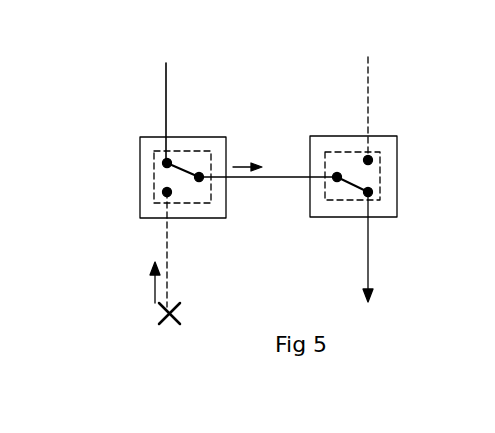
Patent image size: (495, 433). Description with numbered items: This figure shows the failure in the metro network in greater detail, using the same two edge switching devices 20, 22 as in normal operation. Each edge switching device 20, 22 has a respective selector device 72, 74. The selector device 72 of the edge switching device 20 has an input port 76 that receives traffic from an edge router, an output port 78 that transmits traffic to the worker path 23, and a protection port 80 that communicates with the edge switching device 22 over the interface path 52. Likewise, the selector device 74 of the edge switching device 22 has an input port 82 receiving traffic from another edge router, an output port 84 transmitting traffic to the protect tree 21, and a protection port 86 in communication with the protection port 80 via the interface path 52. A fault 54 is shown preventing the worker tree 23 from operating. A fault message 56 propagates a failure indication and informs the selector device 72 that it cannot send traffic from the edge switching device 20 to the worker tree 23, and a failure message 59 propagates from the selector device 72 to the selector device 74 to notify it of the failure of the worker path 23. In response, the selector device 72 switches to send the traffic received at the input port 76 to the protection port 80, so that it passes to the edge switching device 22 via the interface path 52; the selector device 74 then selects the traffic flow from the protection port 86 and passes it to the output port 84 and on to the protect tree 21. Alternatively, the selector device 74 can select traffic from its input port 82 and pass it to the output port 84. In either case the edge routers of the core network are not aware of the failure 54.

The edge switching device 20 is at (218, 137).
The edge switching device 22 is at (318, 136).
The selector device 72 is at (157, 177).
The selector device 74 is at (380, 178).
The input port 76 is at (167, 163).
The output port 78 is at (167, 202).
The protection port 80 is at (199, 177).
The input port 82 is at (368, 160).
The output port 84 is at (368, 192).
The protection port 86 is at (337, 177).
The interface path 52 is at (278, 176).
The failure message 59 is at (238, 163).
The fault message 56 is at (150, 287).
The fault 54 is at (162, 317).
The worker path 23 is at (173, 265).
The protect tree 21 is at (377, 257).